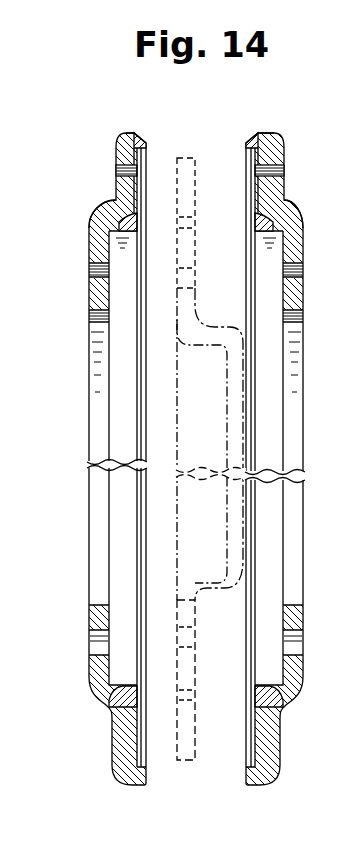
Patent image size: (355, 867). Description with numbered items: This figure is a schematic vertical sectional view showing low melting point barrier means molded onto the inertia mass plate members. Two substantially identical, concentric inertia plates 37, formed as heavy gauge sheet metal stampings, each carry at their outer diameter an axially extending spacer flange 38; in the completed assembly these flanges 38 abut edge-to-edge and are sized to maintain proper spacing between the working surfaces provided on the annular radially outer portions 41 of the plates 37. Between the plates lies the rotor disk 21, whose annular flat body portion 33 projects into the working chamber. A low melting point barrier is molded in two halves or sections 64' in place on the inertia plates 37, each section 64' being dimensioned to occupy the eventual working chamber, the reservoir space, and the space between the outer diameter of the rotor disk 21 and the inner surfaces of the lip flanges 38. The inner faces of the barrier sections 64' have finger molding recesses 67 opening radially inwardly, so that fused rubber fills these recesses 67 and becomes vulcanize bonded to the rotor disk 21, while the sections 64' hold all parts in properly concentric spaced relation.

The rotor disk 21 is at (217, 328).
The annular flat body portion 33 is at (187, 167).
The inertia plate member 37 is at (98, 245).
The spacer flange 38 is at (256, 132).
The radially outer portion 41 is at (119, 151).
The barrier section 64' is at (190, 202).
The finger molding recess 67 is at (138, 219).